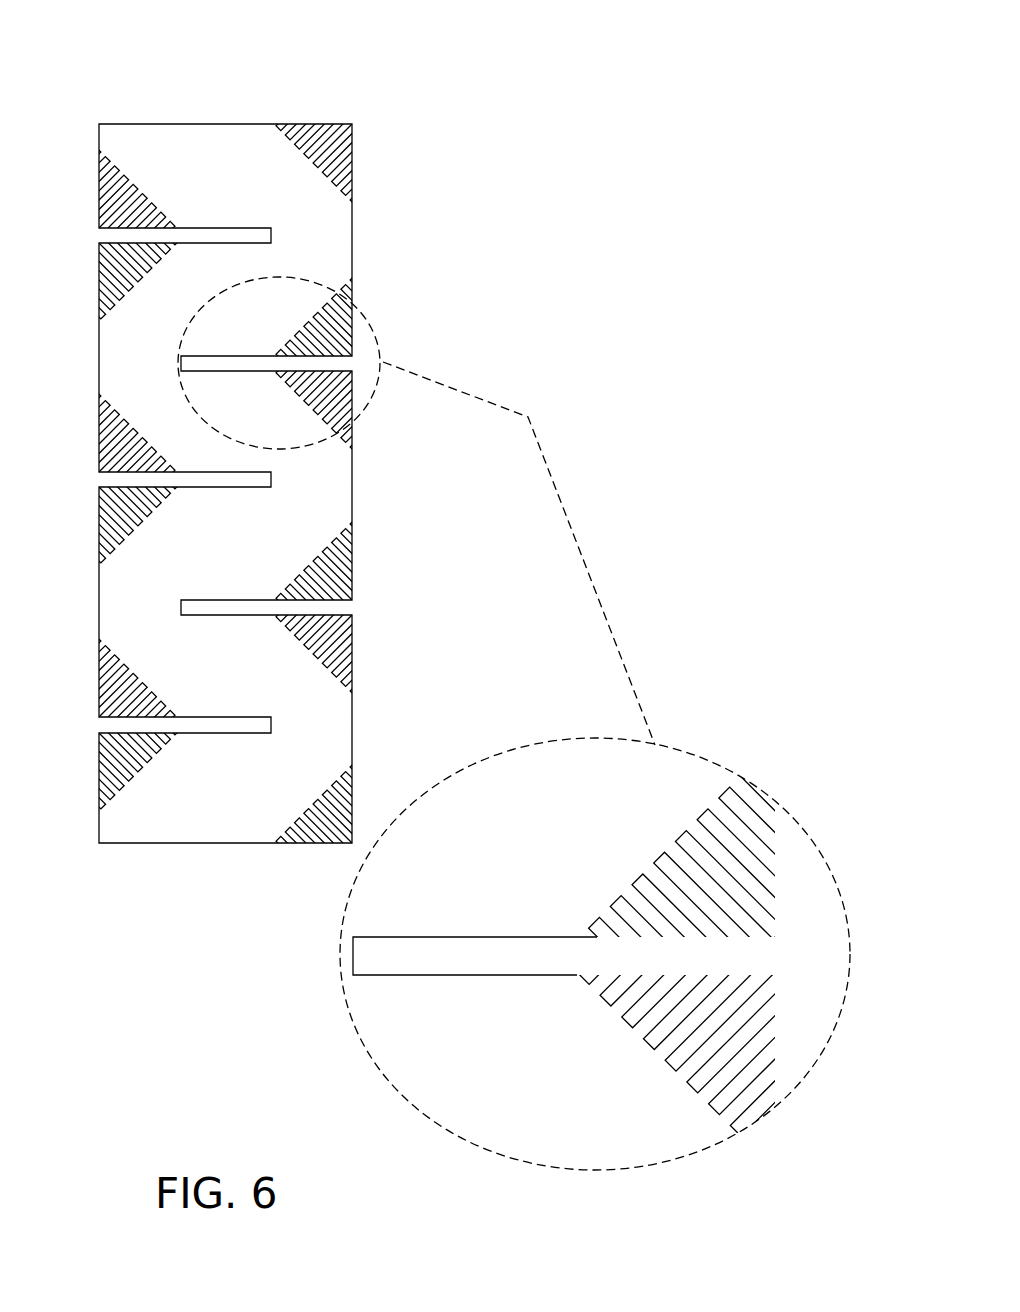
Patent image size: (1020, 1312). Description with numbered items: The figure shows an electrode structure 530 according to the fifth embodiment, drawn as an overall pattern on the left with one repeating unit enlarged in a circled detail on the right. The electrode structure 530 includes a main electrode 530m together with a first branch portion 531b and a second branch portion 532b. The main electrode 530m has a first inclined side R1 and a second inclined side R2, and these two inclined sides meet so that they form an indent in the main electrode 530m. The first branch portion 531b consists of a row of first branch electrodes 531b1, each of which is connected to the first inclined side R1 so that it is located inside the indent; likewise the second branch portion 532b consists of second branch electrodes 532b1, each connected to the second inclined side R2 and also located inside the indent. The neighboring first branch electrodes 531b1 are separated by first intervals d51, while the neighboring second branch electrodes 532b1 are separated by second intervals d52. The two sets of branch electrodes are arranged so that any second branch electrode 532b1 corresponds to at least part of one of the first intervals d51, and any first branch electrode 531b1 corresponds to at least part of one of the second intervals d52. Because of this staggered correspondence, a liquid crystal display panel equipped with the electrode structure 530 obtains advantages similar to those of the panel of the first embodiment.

The electrode structure 530 is at (702, 39).
The main electrode 530m is at (207, 124).
The first branch portion 531b is at (463, 676).
The first branch electrode 531b1 is at (680, 853).
The second branch portion 532b is at (308, 1108).
The second branch electrode 532b1 is at (653, 1030).
The first inclined side R1 is at (703, 798).
The second inclined side R2 is at (692, 1104).
The first interval d51 is at (658, 933).
The second interval d52 is at (730, 975).